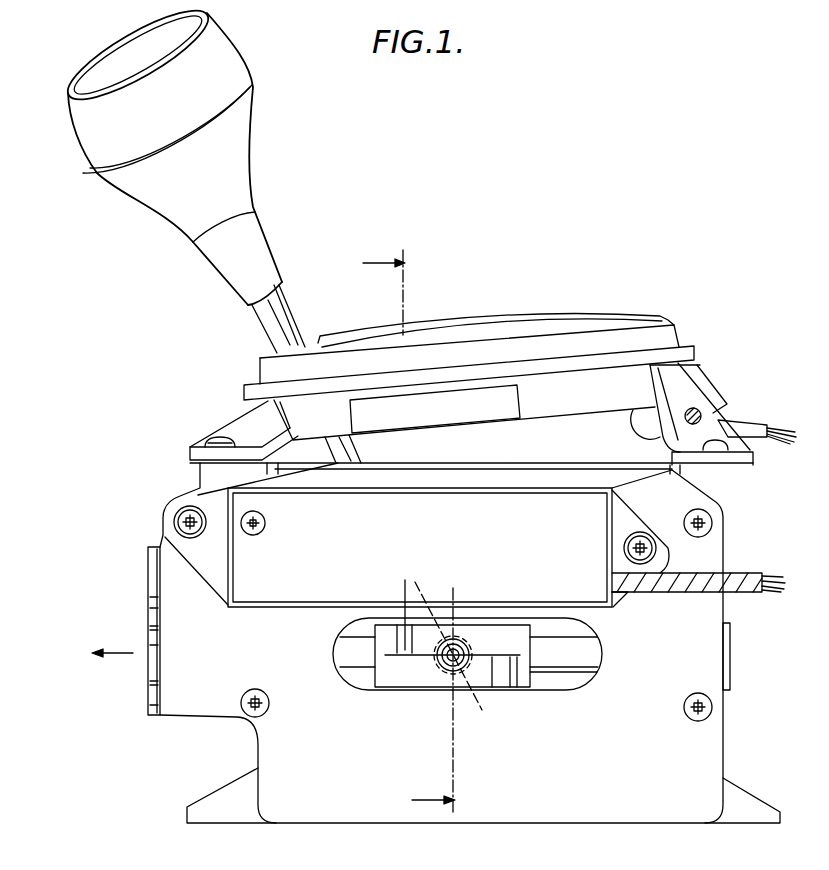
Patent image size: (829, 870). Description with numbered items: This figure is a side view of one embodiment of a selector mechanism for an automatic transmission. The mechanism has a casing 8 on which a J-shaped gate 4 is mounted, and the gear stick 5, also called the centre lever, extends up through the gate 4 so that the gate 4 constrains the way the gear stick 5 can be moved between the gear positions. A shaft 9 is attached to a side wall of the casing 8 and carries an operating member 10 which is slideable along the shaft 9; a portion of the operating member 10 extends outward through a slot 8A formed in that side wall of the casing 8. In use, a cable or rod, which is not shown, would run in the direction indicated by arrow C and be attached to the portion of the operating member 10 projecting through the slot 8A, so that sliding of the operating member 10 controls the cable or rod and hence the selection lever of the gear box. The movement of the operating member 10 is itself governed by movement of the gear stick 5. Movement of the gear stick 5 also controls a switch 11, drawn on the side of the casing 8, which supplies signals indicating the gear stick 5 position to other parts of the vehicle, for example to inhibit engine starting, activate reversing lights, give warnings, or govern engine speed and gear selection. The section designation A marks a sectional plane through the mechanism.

The gate 4 is at (495, 315).
The gear stick 5 is at (268, 318).
The casing 8 is at (205, 478).
The slot 8A is at (350, 688).
The shaft 9 is at (590, 651).
The operating member 10 is at (517, 670).
The switch 11 is at (488, 549).
The section line A is at (395, 531).
The arrow C is at (112, 636).